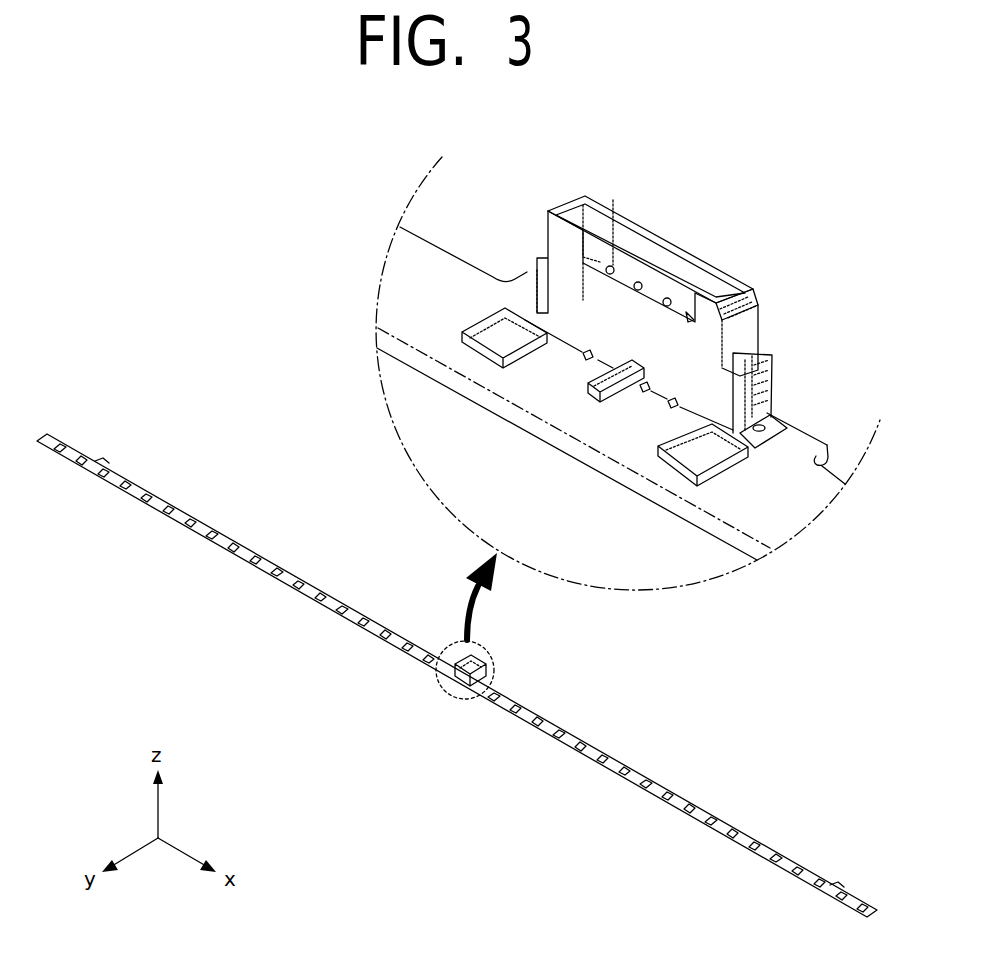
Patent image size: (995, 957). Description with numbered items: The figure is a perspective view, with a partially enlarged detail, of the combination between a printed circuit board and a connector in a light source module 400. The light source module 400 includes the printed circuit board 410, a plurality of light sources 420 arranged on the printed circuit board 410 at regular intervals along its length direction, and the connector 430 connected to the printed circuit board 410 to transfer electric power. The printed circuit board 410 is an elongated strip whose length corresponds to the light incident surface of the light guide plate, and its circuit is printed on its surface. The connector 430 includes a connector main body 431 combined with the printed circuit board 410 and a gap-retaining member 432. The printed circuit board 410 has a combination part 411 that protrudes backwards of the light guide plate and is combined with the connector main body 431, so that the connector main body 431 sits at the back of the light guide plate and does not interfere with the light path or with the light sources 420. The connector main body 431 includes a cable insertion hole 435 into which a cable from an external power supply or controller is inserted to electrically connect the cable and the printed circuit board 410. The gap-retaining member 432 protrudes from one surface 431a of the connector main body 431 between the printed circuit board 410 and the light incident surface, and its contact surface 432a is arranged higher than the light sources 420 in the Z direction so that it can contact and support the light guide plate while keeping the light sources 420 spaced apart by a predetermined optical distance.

The light source module 400 is at (292, 665).
The printed circuit board 410 is at (790, 521).
The combination part 411 is at (813, 423).
The light sources 420 is at (497, 345).
The connector 430 is at (690, 240).
The connector main body 431 is at (752, 318).
The one surface of the connector main body 431a is at (706, 355).
The gap-retaining member 432 is at (590, 398).
The contact surface 432a is at (628, 375).
The cable insertion hole 435 is at (650, 258).